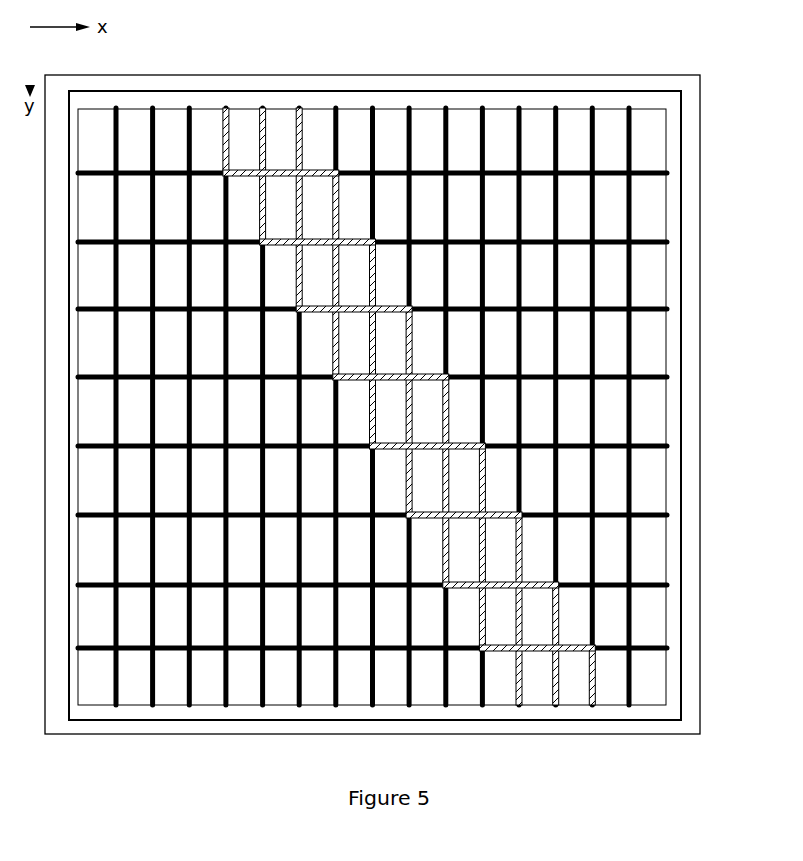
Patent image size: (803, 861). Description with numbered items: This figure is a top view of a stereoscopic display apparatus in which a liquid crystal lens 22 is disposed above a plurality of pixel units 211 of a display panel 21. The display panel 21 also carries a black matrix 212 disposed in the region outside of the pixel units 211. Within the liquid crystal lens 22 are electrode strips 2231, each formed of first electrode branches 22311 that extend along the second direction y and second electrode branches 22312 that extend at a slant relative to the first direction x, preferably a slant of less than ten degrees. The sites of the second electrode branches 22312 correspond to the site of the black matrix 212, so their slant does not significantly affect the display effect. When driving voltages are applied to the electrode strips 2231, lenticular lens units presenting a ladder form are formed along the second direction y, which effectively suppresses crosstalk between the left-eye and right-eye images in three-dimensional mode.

The display panel 21 is at (497, 75).
The liquid crystal lens 22 is at (428, 90).
The pixel units 211 is at (570, 123).
The black matrix 212 is at (657, 170).
The electrode strip 2231 is at (357, 370).
The first electrode branch 22311 is at (262, 140).
The second electrode branch 22312 is at (275, 167).